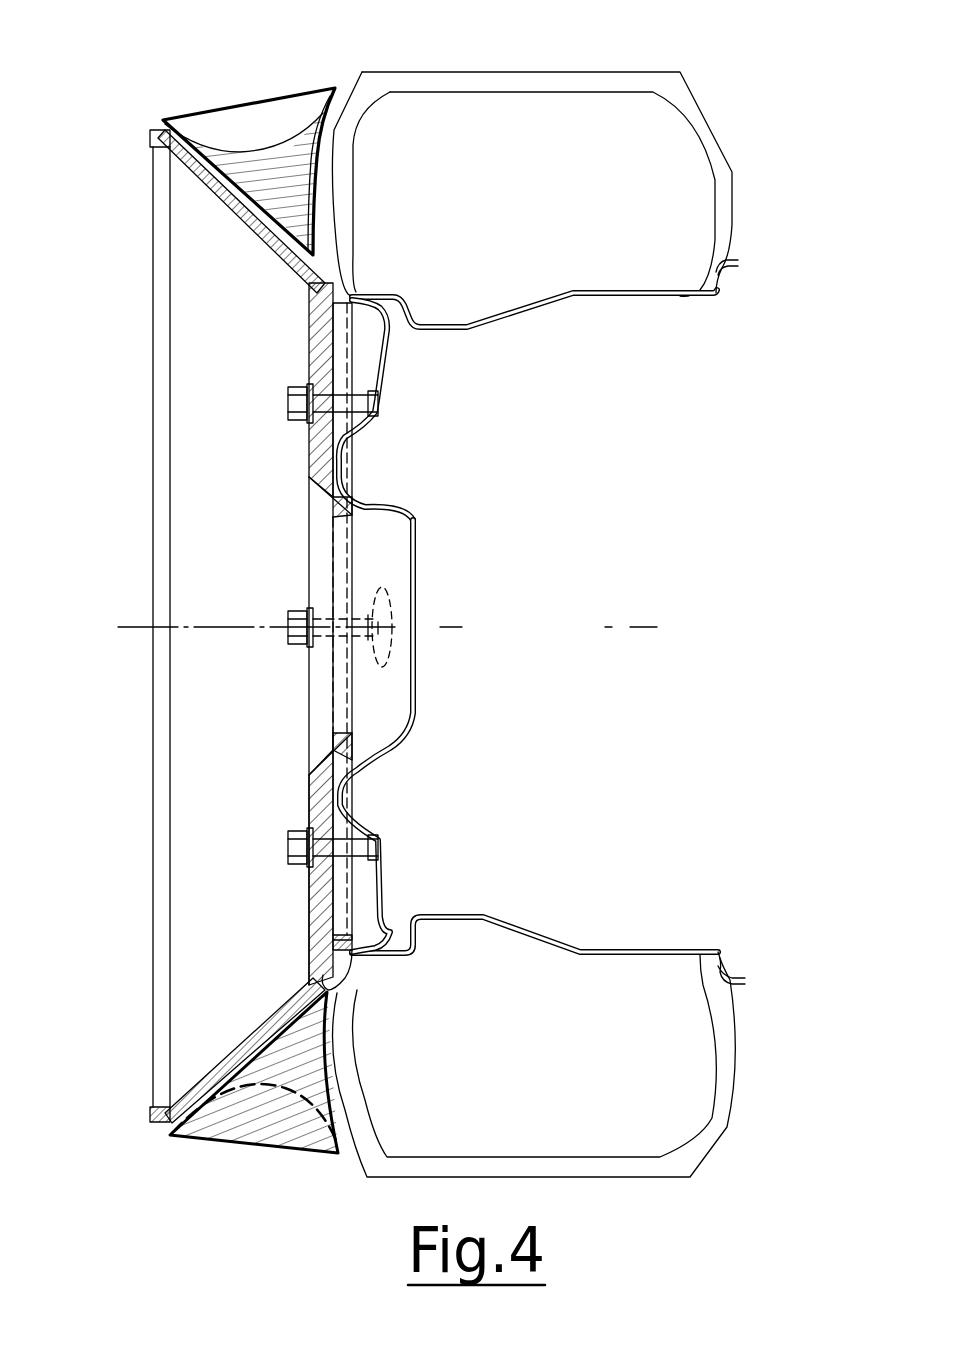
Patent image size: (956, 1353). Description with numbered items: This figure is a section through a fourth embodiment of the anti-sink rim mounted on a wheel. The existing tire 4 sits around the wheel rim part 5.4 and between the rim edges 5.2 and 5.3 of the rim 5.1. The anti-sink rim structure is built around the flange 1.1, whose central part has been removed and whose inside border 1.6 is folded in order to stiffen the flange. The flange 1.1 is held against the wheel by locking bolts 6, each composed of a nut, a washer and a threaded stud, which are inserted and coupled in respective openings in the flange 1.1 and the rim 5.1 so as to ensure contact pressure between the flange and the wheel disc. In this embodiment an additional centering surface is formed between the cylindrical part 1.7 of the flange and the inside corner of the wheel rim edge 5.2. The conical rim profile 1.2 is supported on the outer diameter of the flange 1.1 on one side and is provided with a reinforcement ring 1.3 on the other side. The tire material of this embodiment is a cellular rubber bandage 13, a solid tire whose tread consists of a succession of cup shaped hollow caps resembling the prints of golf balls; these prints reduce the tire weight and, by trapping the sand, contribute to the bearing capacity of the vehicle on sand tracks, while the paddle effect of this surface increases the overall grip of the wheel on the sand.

The flange 1.1 is at (319, 437).
The conical rim profile 1.2 is at (233, 207).
The reinforcement ring 1.3 is at (158, 136).
The inside border 1.6 is at (343, 499).
The cylindrical part 1.7 is at (341, 303).
The existing tire 4 is at (548, 78).
The rim 5.1 is at (414, 583).
The wheel rim edge 5.2 is at (319, 262).
The rim edge 5.3 is at (715, 295).
The wheel rim part 5.4 is at (468, 328).
The locking bolts 6 is at (322, 847).
The cellular rubber bandage 13 is at (291, 1060).